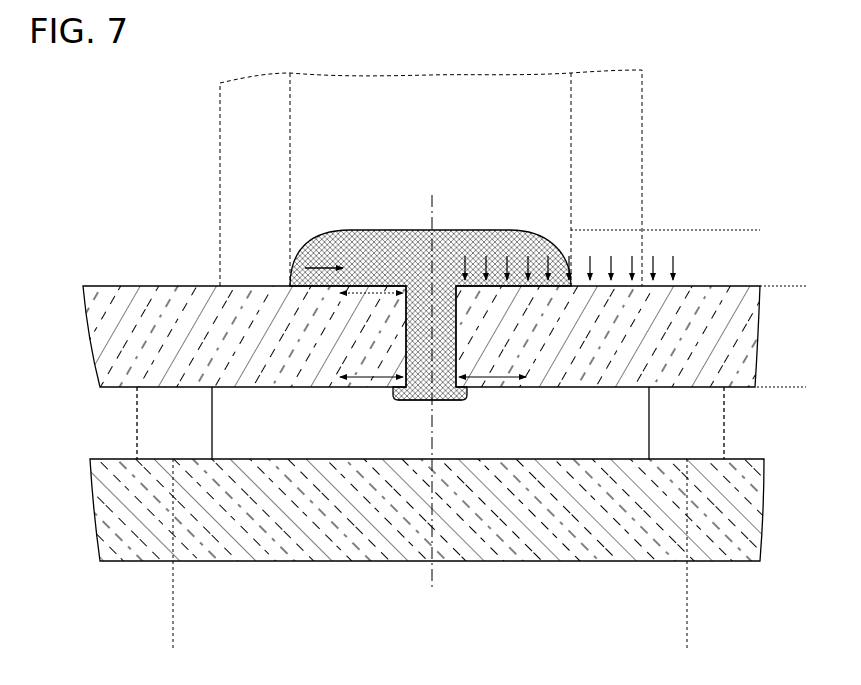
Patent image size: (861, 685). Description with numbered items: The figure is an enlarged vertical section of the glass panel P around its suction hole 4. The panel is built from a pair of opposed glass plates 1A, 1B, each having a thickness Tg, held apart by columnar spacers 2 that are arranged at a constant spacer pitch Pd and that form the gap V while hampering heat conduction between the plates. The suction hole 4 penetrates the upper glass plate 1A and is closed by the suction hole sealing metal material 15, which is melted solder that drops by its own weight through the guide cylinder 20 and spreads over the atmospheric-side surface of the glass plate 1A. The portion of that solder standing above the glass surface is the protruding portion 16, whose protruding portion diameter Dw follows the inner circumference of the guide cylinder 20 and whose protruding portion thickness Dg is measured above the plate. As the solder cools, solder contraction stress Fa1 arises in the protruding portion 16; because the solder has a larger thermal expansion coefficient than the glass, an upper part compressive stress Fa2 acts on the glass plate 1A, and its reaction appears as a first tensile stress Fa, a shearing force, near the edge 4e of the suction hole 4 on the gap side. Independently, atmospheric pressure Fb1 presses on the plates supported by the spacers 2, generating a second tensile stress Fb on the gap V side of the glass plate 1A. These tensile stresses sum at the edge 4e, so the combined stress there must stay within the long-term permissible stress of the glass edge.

The guide cylinder 20 is at (642, 104).
The glass panel P is at (765, 168).
The glass plate 1A is at (148, 285).
The glass plate 1B is at (145, 562).
The columnar spacers 2 is at (153, 425).
The suction hole 4 is at (406, 338).
The edge of the suction hole on the gap side 4e is at (440, 402).
The suction hole sealing metal material 15 is at (441, 222).
The protruding portion 16 is at (480, 230).
The gap V is at (749, 426).
The first tensile stress Fa is at (350, 378).
The solder contraction stress Fa1 is at (328, 268).
The upper part compressive stress Fa2 is at (362, 290).
The second tensile stress Fb is at (498, 362).
The atmospheric pressure Fb1 is at (676, 262).
The protruding portion diameter Dw is at (571, 112).
The protruding portion thickness Dg is at (723, 232).
The thickness of the glass plate Tg is at (792, 287).
The spacer pitch Pd is at (686, 630).